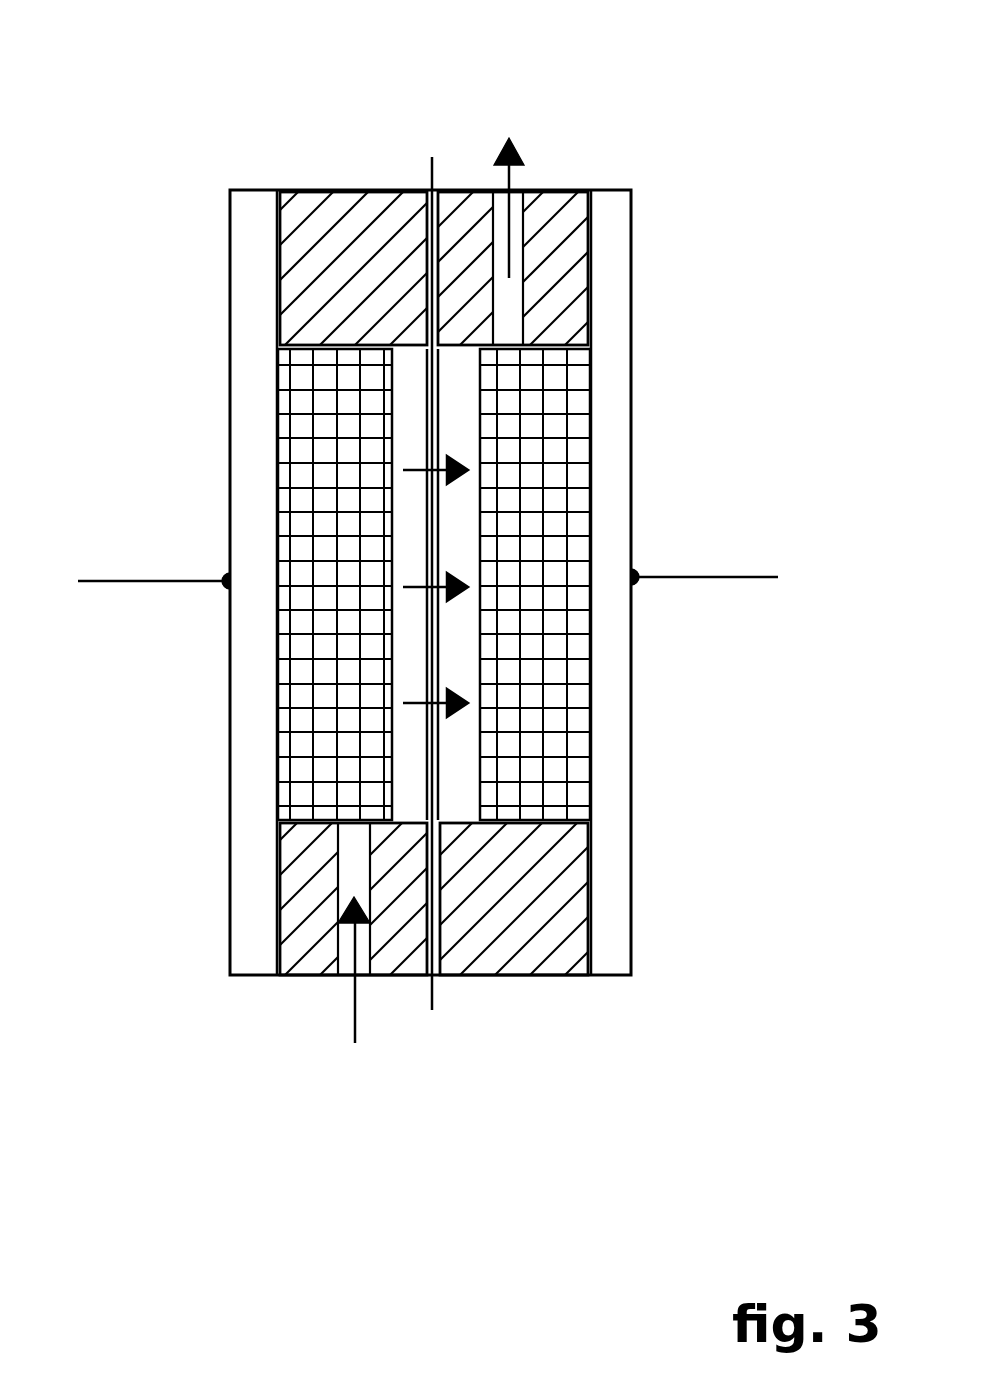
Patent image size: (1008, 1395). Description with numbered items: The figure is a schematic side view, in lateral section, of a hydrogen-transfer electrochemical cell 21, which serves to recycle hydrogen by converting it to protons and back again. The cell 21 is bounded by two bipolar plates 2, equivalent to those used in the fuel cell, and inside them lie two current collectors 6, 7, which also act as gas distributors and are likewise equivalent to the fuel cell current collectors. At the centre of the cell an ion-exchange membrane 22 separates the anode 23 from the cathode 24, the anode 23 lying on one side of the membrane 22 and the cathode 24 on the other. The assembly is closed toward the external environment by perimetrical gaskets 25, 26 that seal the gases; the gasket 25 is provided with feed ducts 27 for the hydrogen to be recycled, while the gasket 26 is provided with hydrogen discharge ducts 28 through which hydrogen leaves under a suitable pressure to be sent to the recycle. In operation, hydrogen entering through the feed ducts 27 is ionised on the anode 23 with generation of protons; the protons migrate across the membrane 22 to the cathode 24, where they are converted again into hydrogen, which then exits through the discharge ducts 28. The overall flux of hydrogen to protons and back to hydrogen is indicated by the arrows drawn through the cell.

The bipolar plates 2 is at (253, 638).
The current collector 6 is at (332, 685).
The current collector 7 is at (528, 620).
The hydrogen-transfer electrochemical cell 21 is at (637, 182).
The ion-exchange membrane 22 is at (418, 160).
The anode 23 is at (410, 745).
The cathode 24 is at (460, 738).
The perimetrical gasket 25 is at (310, 847).
The perimetrical gasket 26 is at (540, 848).
The feed ducts 27 is at (347, 953).
The hydrogen discharge ducts 28 is at (518, 210).